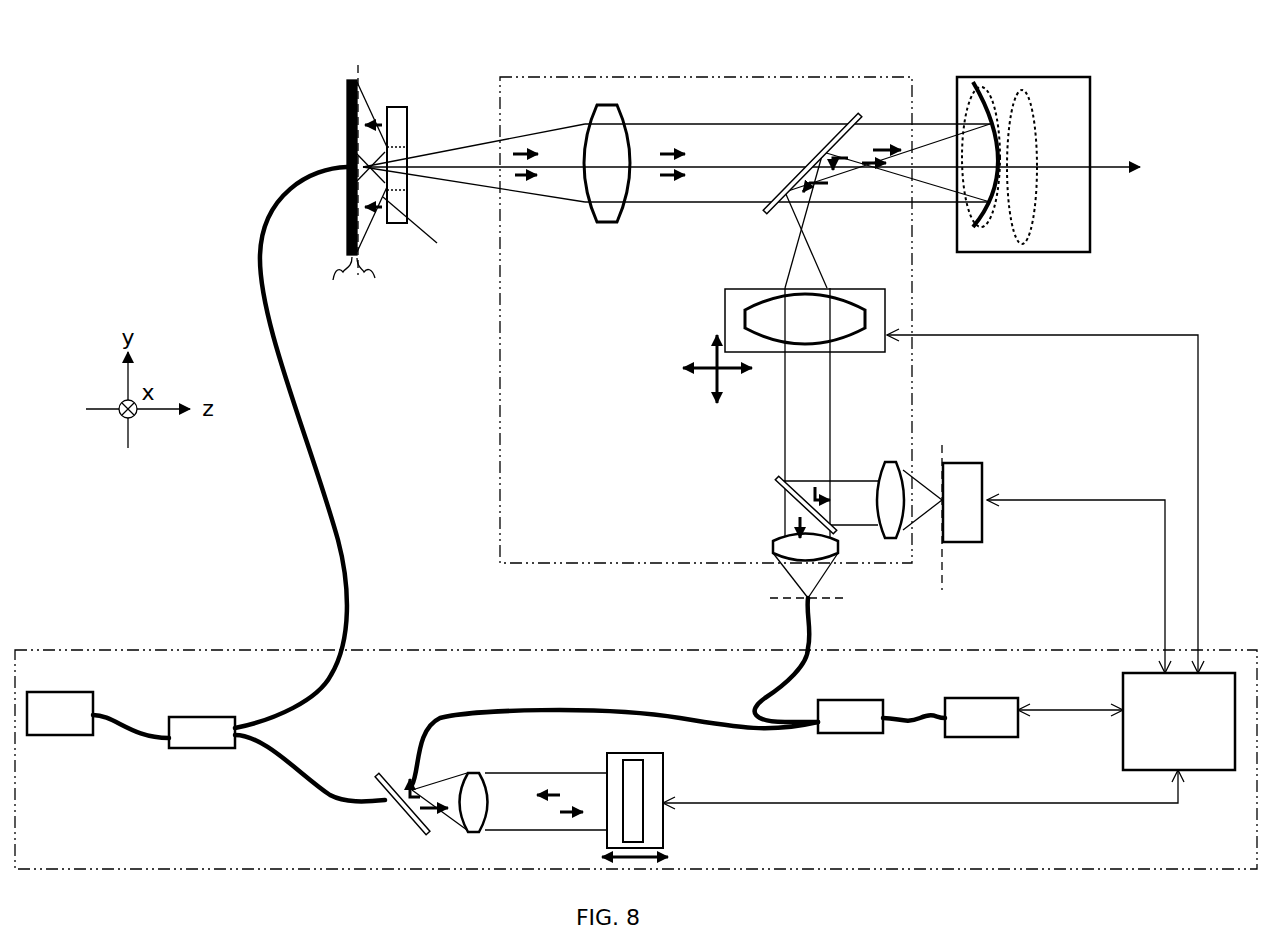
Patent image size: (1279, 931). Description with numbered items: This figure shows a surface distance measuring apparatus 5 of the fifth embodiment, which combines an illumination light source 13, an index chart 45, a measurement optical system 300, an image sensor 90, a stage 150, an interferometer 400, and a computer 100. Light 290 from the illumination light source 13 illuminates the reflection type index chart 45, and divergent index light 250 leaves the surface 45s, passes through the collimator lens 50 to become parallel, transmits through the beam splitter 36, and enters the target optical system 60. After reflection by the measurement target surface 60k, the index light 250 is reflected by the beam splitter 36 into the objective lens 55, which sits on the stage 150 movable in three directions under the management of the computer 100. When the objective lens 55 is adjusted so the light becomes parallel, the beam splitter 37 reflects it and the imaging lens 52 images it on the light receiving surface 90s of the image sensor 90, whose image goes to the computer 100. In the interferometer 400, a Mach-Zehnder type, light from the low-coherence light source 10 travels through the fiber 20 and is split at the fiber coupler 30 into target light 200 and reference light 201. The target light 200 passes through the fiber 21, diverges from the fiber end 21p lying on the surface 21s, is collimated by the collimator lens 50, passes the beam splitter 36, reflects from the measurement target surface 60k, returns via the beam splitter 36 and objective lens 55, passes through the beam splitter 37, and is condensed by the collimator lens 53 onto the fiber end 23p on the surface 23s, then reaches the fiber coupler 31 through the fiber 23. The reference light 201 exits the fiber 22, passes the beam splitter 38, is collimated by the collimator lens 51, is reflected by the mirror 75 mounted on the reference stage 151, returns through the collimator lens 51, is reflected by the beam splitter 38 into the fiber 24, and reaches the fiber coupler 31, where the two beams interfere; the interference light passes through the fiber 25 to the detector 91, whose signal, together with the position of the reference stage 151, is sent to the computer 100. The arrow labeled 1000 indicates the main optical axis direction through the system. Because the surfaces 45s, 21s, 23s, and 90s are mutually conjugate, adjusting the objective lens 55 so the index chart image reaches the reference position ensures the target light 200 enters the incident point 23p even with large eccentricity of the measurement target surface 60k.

The surface distance measuring apparatus 5 is at (696, 26).
The low-coherence light source 10 is at (80, 700).
The illumination light source 13 is at (393, 107).
The fiber 20 is at (132, 726).
The fiber 21 is at (330, 693).
The fiber end (ejection point) 21p is at (433, 232).
The surface including the exit point 21s is at (387, 275).
The fiber 22 is at (320, 795).
The fiber 23 is at (735, 697).
The fiber end (incident point) 23p is at (808, 598).
The surface including the incident point 23s is at (835, 598).
The fiber 24 is at (578, 714).
The fiber 25 is at (918, 715).
The fiber coupler 30 is at (195, 725).
The fiber coupler 31 is at (845, 710).
The beam splitter 36 is at (850, 118).
The beam splitter 37 is at (777, 493).
The beam splitter 38 is at (385, 778).
The index chart 45 is at (347, 117).
The surface of the index chart 45s is at (334, 286).
The collimator lens 50 is at (607, 215).
The collimator lens 51 is at (475, 773).
The imaging lens 52 is at (891, 462).
The collimator lens 53 is at (773, 547).
The objective lens 55 is at (860, 325).
The target optical system 60 is at (1037, 252).
The measurement target surface 60k is at (975, 86).
The mirror 75 is at (648, 785).
The image sensor 90 is at (972, 540).
The light receiving surface 90s is at (945, 552).
The detector 91 is at (995, 705).
The computer (calculating unit) 100 is at (1130, 742).
The stage (adjusting unit) 150 is at (887, 300).
The stage (optical path length changing unit, reference stage) 151 is at (665, 830).
The target light 200 is at (540, 177).
The reference light 201 is at (430, 800).
The index light 250 is at (520, 150).
The light 290 is at (378, 118).
The measurement optical system 300 is at (815, 77).
The interferometer 400 is at (443, 648).
The optical axis 1000 is at (1115, 157).